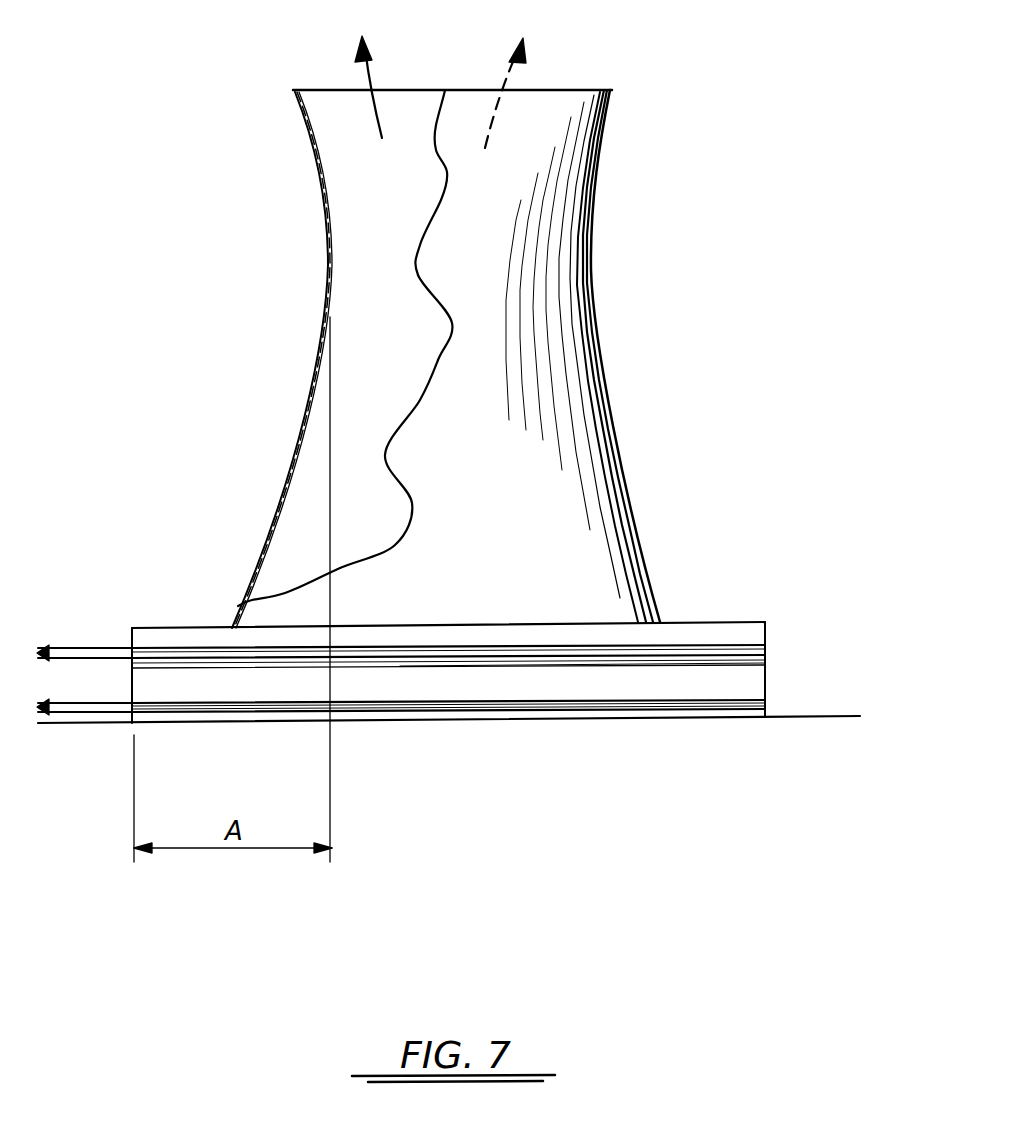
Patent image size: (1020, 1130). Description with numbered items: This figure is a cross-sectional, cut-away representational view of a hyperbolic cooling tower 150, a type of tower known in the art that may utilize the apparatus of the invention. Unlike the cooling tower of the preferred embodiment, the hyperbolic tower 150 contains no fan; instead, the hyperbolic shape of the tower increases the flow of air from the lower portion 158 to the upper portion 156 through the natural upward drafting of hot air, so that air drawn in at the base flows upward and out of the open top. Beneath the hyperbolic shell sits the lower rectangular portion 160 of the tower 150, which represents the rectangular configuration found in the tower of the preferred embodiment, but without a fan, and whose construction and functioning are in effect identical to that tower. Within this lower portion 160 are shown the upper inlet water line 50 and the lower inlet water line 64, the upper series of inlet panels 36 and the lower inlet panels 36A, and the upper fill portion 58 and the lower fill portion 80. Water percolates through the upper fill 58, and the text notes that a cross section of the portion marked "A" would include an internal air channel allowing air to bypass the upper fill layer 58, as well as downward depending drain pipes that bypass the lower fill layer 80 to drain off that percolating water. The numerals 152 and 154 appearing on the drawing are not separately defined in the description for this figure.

The tower 150 is at (612, 345).
The platform 152 is at (768, 675).
The flow direction arrow 154 is at (507, 77).
The upper portion 156 is at (420, 90).
The lower portion 158 is at (230, 628).
The lower rectangular portion 160 is at (706, 615).
The upper inlet water line 50 is at (74, 648).
The upper series of inlet panels 36 is at (128, 663).
The lower inlet water line 64 is at (78, 712).
The lower inlet panels 36A is at (127, 717).
The lower fill portion 80 is at (482, 708).
The upper fill portion 58 is at (612, 660).